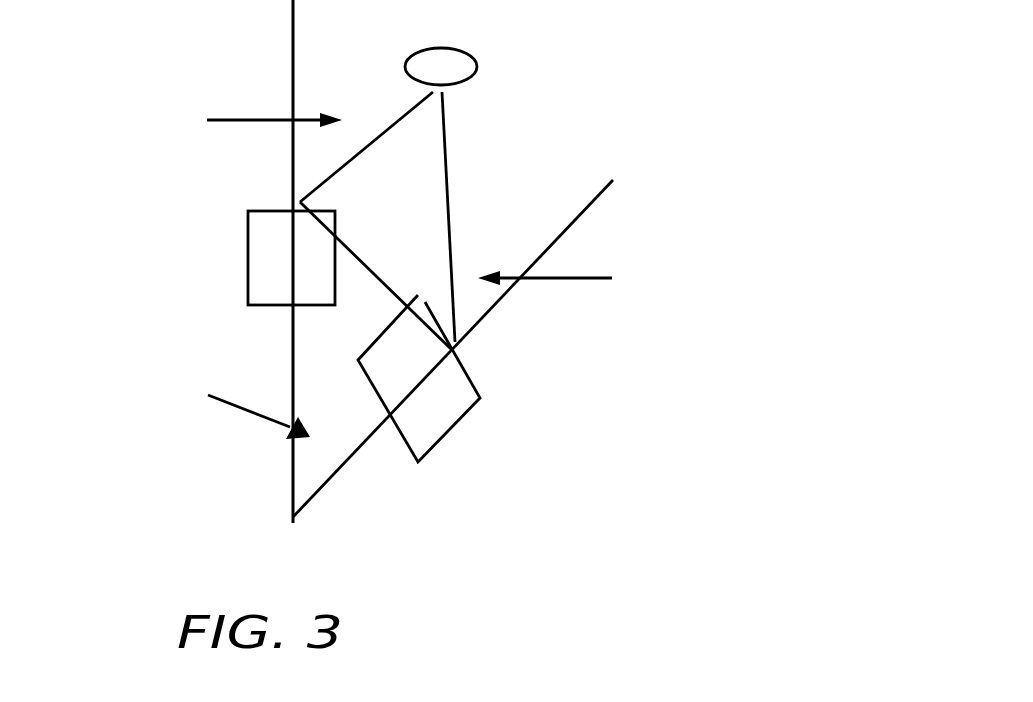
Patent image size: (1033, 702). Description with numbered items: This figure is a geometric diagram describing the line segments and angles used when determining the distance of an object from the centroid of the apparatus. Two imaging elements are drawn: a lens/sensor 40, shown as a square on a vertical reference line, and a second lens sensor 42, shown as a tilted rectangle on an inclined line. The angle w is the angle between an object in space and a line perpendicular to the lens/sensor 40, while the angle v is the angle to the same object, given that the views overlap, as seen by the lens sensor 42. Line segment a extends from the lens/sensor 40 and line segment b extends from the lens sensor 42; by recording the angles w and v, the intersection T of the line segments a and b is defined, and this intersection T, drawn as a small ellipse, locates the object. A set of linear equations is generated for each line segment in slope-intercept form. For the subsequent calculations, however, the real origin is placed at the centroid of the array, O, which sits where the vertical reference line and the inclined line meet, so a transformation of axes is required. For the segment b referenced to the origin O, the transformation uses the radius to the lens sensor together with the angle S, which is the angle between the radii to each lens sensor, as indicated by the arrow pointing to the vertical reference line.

The lens/sensor 40 is at (270, 253).
The lens sensor 42 is at (460, 387).
The intersection T is at (543, 52).
The line segment a is at (366, 140).
The line segment b is at (458, 217).
The angle w is at (184, 114).
The angle v is at (609, 267).
The angle S is at (169, 403).
The centroid of the array O is at (208, 489).